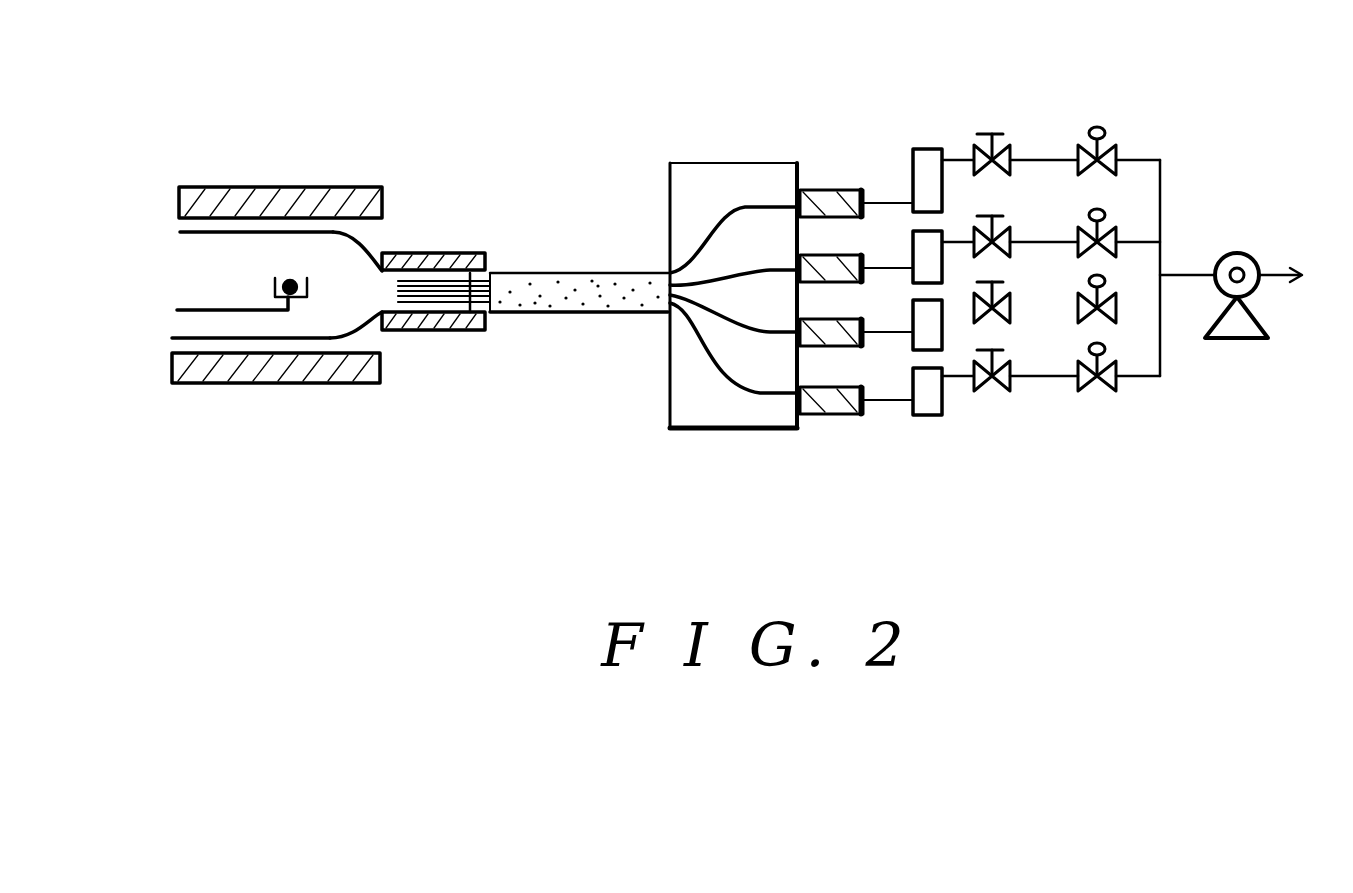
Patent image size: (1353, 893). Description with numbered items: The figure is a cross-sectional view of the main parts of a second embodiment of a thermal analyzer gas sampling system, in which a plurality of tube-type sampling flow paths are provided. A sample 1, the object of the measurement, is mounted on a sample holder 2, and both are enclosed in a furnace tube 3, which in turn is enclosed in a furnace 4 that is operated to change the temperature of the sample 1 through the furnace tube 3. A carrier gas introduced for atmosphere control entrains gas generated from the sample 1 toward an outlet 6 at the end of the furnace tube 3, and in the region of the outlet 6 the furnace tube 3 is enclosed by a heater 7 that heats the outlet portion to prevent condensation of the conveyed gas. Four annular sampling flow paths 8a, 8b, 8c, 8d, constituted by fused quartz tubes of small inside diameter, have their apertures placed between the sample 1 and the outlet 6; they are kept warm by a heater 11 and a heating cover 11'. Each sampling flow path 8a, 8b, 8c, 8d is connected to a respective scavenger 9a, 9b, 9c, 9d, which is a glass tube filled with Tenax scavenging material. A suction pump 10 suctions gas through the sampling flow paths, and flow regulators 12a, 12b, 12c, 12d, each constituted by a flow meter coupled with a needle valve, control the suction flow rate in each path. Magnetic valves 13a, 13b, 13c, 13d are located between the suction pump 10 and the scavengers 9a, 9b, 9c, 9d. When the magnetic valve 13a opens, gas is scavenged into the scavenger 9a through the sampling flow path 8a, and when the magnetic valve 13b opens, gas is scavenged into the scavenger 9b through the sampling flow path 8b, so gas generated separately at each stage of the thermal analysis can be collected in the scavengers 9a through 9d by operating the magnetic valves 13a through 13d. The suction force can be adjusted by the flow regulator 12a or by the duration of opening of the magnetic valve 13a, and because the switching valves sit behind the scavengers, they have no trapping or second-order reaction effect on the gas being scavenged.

The sample 1 is at (383, 253).
The sample holder 2 is at (298, 303).
The furnace tube 3 is at (277, 230).
The furnace 4 is at (240, 203).
The outlet 6 is at (512, 285).
The heater 7 is at (425, 335).
The sampling flow path 8a is at (425, 283).
The sampling flow path 8b is at (437, 287).
The sampling flow path 8c is at (452, 292).
The sampling flow path 8d is at (455, 335).
The scavenger 9a is at (822, 205).
The scavenger 9b is at (822, 265).
The scavenger 9c is at (840, 337).
The scavenger 9d is at (840, 405).
The suction pump 10 is at (1250, 343).
The heater 11 is at (579, 323).
The heating cover 11' is at (733, 336).
The flow regulator 12a is at (908, 114).
The flow regulator 12b is at (917, 231).
The flow regulator 12c is at (961, 316).
The flow regulator 12d is at (935, 422).
The magnetic valve 13a is at (1107, 140).
The magnetic valve 13b is at (1107, 227).
The magnetic valve 13c is at (1103, 325).
The magnetic valve 13d is at (1103, 397).